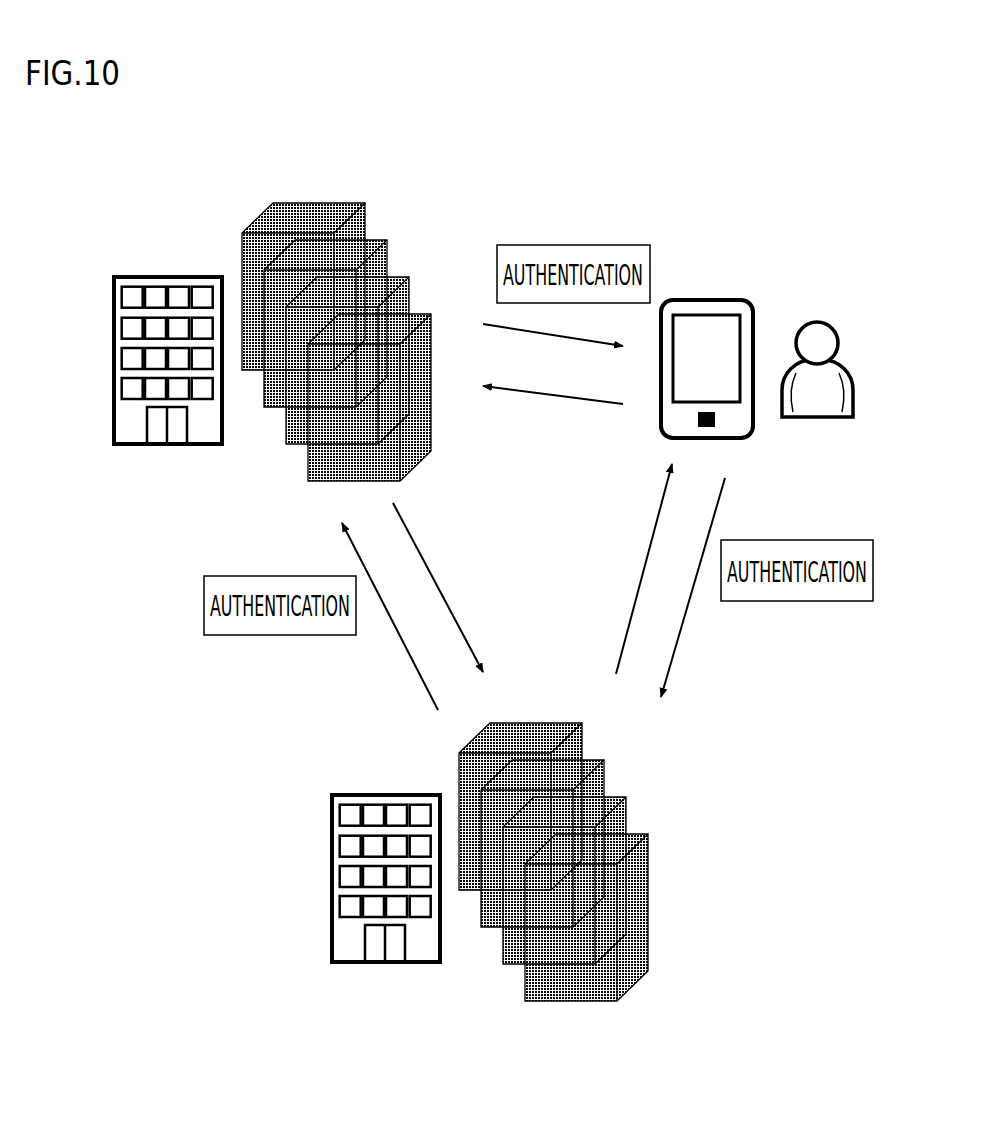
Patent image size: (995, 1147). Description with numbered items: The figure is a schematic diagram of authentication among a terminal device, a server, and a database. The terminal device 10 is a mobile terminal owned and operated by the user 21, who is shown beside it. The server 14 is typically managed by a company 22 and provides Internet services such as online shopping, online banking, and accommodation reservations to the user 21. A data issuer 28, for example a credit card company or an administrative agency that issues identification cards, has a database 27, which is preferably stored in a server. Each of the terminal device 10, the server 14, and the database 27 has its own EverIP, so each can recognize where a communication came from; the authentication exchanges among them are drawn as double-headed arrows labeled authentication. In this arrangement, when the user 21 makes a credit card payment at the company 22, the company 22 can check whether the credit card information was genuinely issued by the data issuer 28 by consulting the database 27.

The terminal device 10 is at (729, 300).
The server 14 is at (333, 203).
The user 21 is at (826, 323).
The company 22 is at (128, 277).
The database 27 is at (548, 722).
The data issuer 28 is at (346, 795).